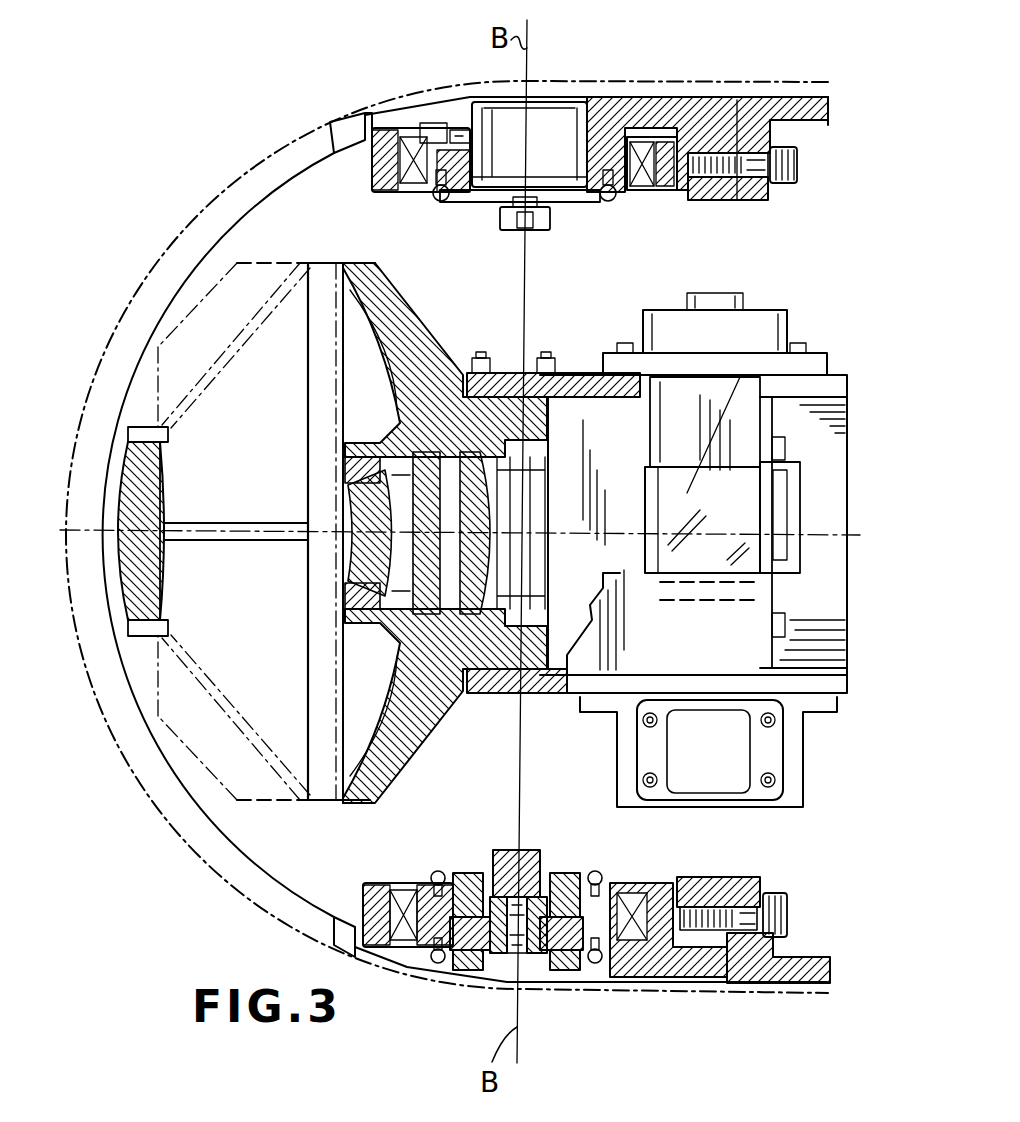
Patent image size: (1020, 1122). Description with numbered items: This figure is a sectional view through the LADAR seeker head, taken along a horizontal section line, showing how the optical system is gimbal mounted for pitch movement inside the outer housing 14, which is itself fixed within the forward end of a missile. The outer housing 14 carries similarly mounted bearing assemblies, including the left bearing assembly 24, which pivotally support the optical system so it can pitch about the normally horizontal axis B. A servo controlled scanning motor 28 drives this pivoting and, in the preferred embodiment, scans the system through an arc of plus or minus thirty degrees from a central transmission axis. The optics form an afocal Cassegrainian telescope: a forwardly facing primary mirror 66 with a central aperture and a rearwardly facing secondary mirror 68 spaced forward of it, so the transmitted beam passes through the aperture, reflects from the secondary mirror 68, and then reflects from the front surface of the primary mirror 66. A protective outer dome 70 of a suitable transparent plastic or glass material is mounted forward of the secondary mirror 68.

The outer housing 14 is at (768, 92).
The left bearing assembly 24 is at (632, 883).
The servo controlled scanning motor 28 is at (552, 112).
The primary mirror 66 is at (337, 778).
The secondary mirror 68 is at (137, 602).
The protective outer dome 70 is at (253, 187).